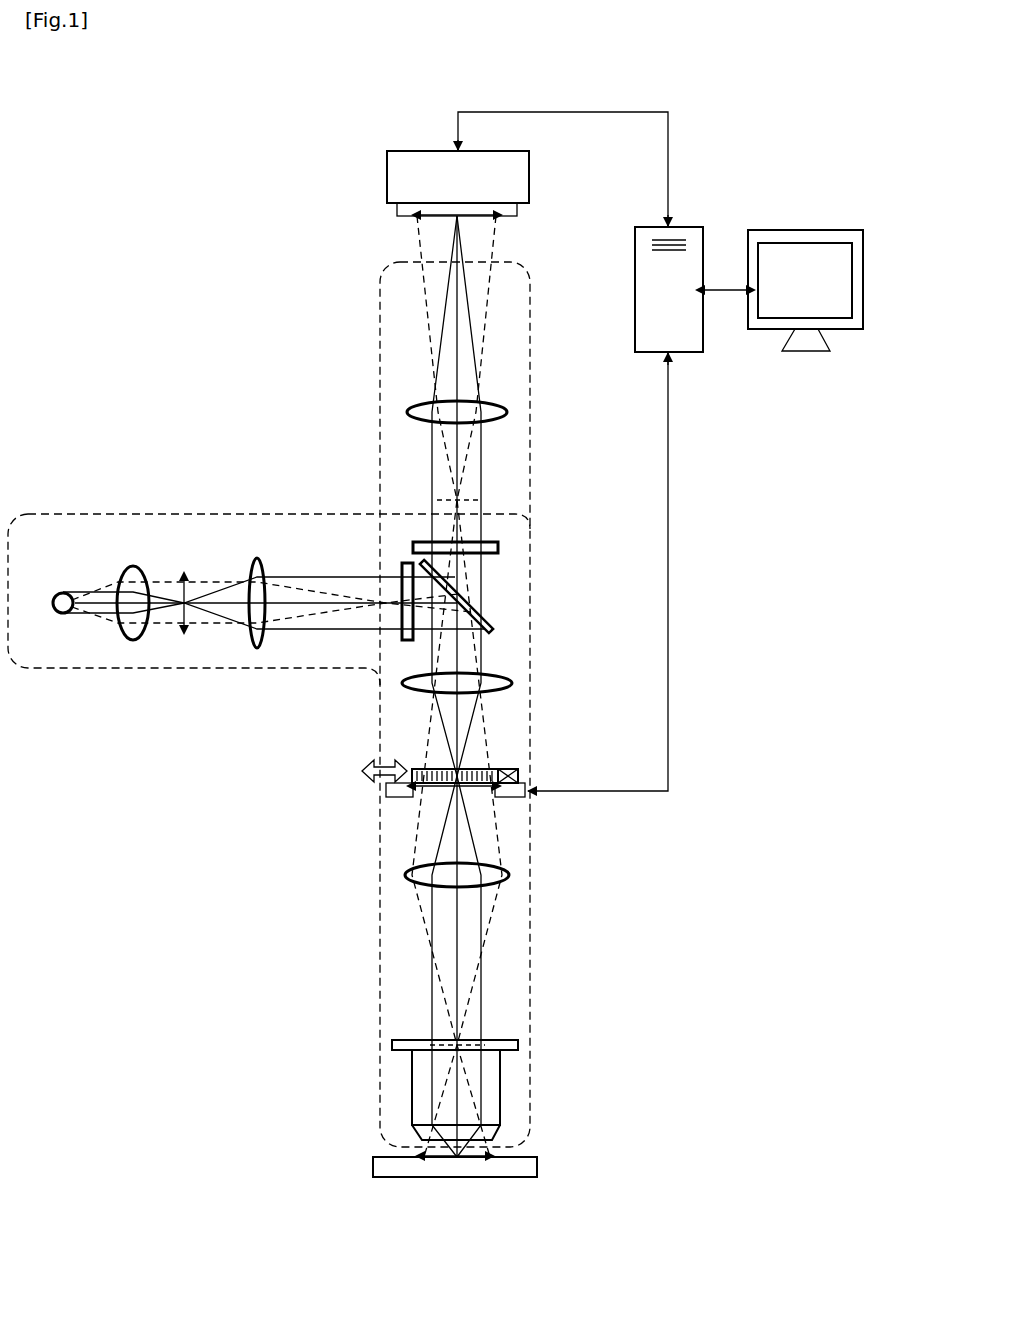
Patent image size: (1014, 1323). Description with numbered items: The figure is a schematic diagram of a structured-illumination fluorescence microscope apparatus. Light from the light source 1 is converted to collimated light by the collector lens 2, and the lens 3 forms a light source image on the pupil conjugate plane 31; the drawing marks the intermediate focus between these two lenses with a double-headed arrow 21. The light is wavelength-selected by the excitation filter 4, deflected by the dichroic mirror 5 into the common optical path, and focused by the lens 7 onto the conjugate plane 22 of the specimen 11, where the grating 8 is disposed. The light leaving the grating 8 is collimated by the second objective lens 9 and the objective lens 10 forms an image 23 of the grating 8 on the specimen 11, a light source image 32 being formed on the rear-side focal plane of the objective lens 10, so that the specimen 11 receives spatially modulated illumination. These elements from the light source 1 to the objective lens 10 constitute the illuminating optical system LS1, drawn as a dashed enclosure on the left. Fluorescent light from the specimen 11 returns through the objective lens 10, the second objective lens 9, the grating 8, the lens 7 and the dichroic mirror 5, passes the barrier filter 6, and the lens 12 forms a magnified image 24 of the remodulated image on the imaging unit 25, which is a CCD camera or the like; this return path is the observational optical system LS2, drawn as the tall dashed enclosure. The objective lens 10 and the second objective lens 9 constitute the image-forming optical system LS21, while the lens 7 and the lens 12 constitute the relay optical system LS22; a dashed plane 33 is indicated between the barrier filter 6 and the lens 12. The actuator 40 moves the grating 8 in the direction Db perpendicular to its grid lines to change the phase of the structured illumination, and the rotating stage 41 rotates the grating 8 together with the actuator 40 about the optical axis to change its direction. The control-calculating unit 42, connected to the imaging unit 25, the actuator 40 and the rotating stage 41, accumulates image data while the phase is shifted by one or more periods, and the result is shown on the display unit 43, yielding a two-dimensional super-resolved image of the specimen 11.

The light source 1 is at (63, 593).
The collector lens 2 is at (133, 566).
The lens 3 is at (258, 558).
The excitation filter 4 is at (406, 640).
The dichroic mirror 5 is at (493, 628).
The barrier filter 6 is at (498, 547).
The lens 7 is at (513, 682).
The grating 8 is at (430, 768).
The second objective lens 9 is at (509, 875).
The objective lens 10 is at (500, 1078).
The specimen 11 is at (533, 1167).
The lens 12 is at (507, 411).
The intermediate image position 21 is at (184, 587).
The conjugate plane 22 is at (432, 784).
The image of the grating 23 is at (450, 1158).
The magnified image 24 is at (478, 216).
The imaging unit 25 is at (387, 181).
The pupil conjugate plane 31 is at (380, 601).
The light source image 32 is at (470, 1043).
The conjugate plane 33 is at (462, 500).
The actuator 40 is at (508, 770).
The rotating stage 41 is at (520, 790).
The control-calculating unit 42 is at (693, 235).
The display unit 43 is at (822, 235).
The direction of grating movement Db is at (362, 771).
The illuminating optical system LS1 is at (165, 513).
The observational optical system LS2 is at (380, 345).
The image-forming optical system LS21 is at (568, 878).
The relay optical system LS22 is at (575, 428).